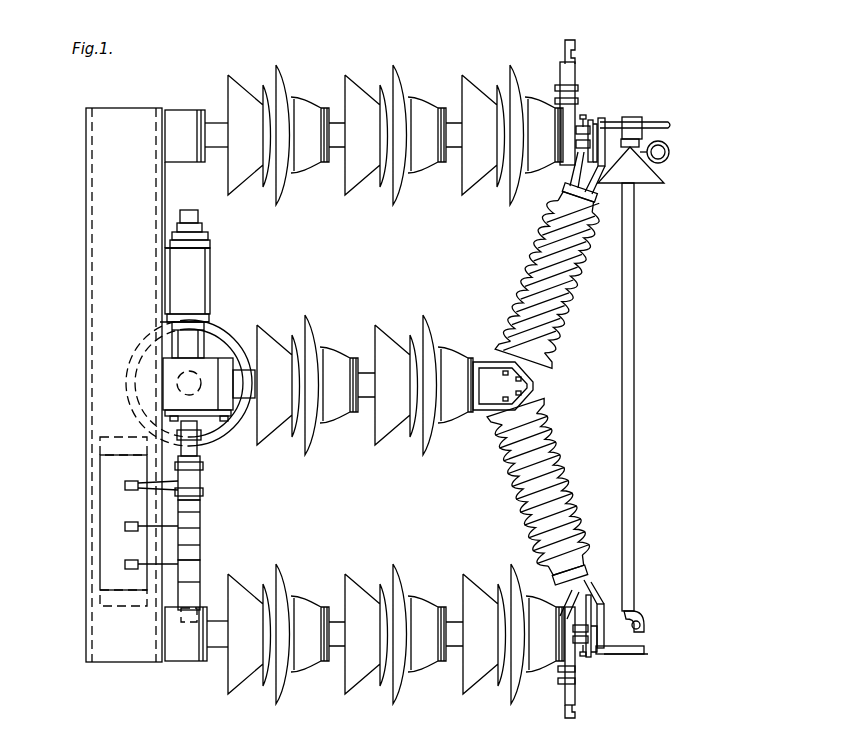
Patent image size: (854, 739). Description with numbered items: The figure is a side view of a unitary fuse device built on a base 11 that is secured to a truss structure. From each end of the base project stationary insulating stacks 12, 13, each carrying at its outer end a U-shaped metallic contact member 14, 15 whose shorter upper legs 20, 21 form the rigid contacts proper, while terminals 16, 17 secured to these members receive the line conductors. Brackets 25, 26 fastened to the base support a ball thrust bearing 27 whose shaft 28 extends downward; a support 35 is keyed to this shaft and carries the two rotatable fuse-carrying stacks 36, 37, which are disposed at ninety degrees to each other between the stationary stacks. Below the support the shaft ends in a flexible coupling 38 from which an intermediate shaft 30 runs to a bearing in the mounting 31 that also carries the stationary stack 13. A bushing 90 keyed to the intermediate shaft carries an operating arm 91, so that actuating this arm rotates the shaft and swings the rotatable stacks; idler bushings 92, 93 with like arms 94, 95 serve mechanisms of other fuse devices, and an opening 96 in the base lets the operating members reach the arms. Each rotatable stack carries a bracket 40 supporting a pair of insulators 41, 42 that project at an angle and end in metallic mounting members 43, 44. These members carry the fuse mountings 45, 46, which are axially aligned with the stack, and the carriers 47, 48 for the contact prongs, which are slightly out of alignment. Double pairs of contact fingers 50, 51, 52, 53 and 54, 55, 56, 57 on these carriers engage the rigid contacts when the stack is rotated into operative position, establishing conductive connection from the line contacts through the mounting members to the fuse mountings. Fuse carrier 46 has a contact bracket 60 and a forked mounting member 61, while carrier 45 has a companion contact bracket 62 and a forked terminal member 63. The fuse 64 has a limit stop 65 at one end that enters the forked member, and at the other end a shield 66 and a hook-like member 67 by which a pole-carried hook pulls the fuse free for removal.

The base 11 is at (88, 134).
The stationary insulating column or stack 12 is at (352, 90).
The stationary insulating column or stack 13 is at (348, 590).
The contact member 14 is at (559, 100).
The contact member 15 is at (566, 690).
The terminal 16 is at (567, 62).
The terminal 17 is at (572, 712).
The upper leg contact 20 is at (584, 115).
The upper leg contact 21 is at (584, 657).
The bracket 25 is at (176, 213).
The bracket 26 is at (206, 316).
The ball thrust bearing 27 is at (212, 268).
The shaft 28 is at (210, 334).
The intermediate shaft 30 is at (181, 614).
The mounting 31 is at (196, 662).
The support 35 is at (238, 362).
The fuse-carrying rotatable stack 36 is at (330, 342).
The fuse-carrying rotatable stack 37 is at (243, 432).
The flexible coupling 38 is at (200, 440).
The bracket 40 is at (492, 362).
The insulator 41 is at (566, 305).
The insulator 42 is at (566, 446).
The mounting member 43 is at (596, 196).
The mounting member 44 is at (586, 584).
The fuse mounting 45 is at (603, 125).
The fuse mounting 46 is at (604, 614).
The contact prong mounting 47 is at (575, 160).
The contact prong mounting 48 is at (570, 602).
The contact finger 50 is at (576, 130).
The contact finger 51 is at (576, 146).
The contact finger 52 is at (591, 128).
The contact finger 53 is at (594, 150).
The contact finger 54 is at (573, 628).
The contact finger 55 is at (575, 645).
The contact finger 56 is at (591, 654).
The contact finger 57 is at (604, 651).
The contact bracket 60 is at (646, 650).
The forked mounting member 61 is at (645, 629).
The contact bracket 62 is at (636, 120).
The forked terminal member 63 is at (670, 124).
The fuse 64 is at (636, 350).
The limit stop 65 is at (640, 622).
The shield 66 is at (660, 180).
The hook-like member 67 is at (670, 152).
The bushing 90 is at (203, 478).
The operating arm 91 is at (138, 491).
The idler bushing 92 is at (203, 527).
The idler bushing 93 is at (203, 572).
The arm 94 is at (138, 532).
The arm 95 is at (138, 570).
The opening 96 is at (100, 556).